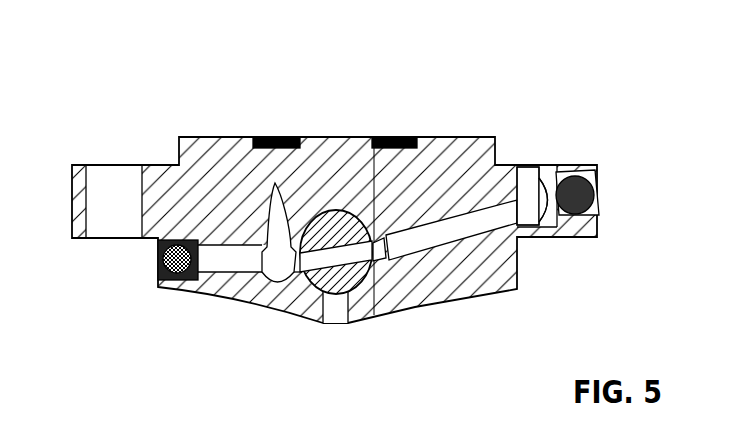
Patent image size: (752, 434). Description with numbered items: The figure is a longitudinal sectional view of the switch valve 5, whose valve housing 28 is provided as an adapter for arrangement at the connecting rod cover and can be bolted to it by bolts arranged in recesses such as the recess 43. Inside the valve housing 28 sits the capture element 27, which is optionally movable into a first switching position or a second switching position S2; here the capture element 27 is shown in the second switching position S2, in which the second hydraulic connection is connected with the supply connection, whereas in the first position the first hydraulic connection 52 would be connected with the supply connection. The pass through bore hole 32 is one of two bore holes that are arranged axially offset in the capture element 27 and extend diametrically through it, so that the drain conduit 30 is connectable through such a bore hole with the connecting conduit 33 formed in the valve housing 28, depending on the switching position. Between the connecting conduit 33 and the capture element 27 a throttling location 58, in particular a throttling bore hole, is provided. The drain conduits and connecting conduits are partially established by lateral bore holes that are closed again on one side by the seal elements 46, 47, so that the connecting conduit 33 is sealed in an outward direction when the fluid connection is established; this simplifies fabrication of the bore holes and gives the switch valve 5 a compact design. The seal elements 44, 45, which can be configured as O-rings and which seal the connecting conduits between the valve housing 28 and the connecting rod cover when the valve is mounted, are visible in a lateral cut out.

The switch valve 5 is at (355, 199).
The capture element 27 is at (370, 290).
The valve housing 28 is at (150, 165).
The drain conduit 30 is at (447, 240).
The pass through bore hole 32 is at (332, 295).
The connecting conduit 33 is at (272, 220).
The recess 43 is at (531, 185).
The seal element 44 is at (270, 137).
The seal element 45 is at (392, 137).
The seal element 46 is at (157, 257).
The seal element 47 is at (604, 187).
The first hydraulic connection 52 is at (532, 196).
The throttling location 58 is at (370, 295).
The second switching position S2 is at (335, 100).